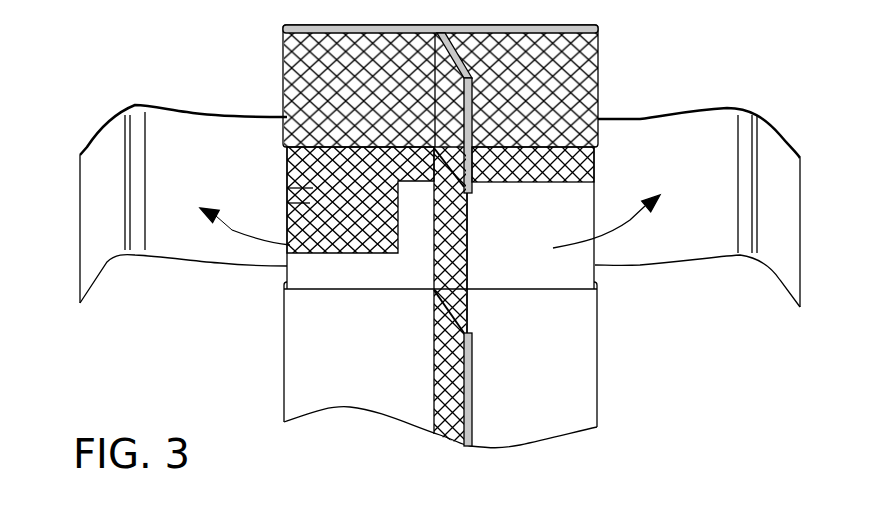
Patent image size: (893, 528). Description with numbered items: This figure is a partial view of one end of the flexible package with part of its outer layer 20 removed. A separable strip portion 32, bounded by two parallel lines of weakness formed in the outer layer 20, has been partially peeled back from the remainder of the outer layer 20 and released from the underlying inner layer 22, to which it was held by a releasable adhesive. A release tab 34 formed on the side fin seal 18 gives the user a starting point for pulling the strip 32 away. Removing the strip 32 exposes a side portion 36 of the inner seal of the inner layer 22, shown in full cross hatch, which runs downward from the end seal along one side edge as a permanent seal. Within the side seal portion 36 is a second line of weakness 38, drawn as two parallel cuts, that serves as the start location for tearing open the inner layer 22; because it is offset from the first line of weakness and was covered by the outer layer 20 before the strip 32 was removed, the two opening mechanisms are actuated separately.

The side fin seal 18 is at (460, 380).
The outer layer 20 is at (137, 103).
The inner layer 22 is at (568, 270).
The separable strip portion 32 is at (70, 200).
The release tab 34 is at (98, 256).
The side portion of the inner seal 36 is at (363, 235).
The line of weakness 38 is at (279, 202).